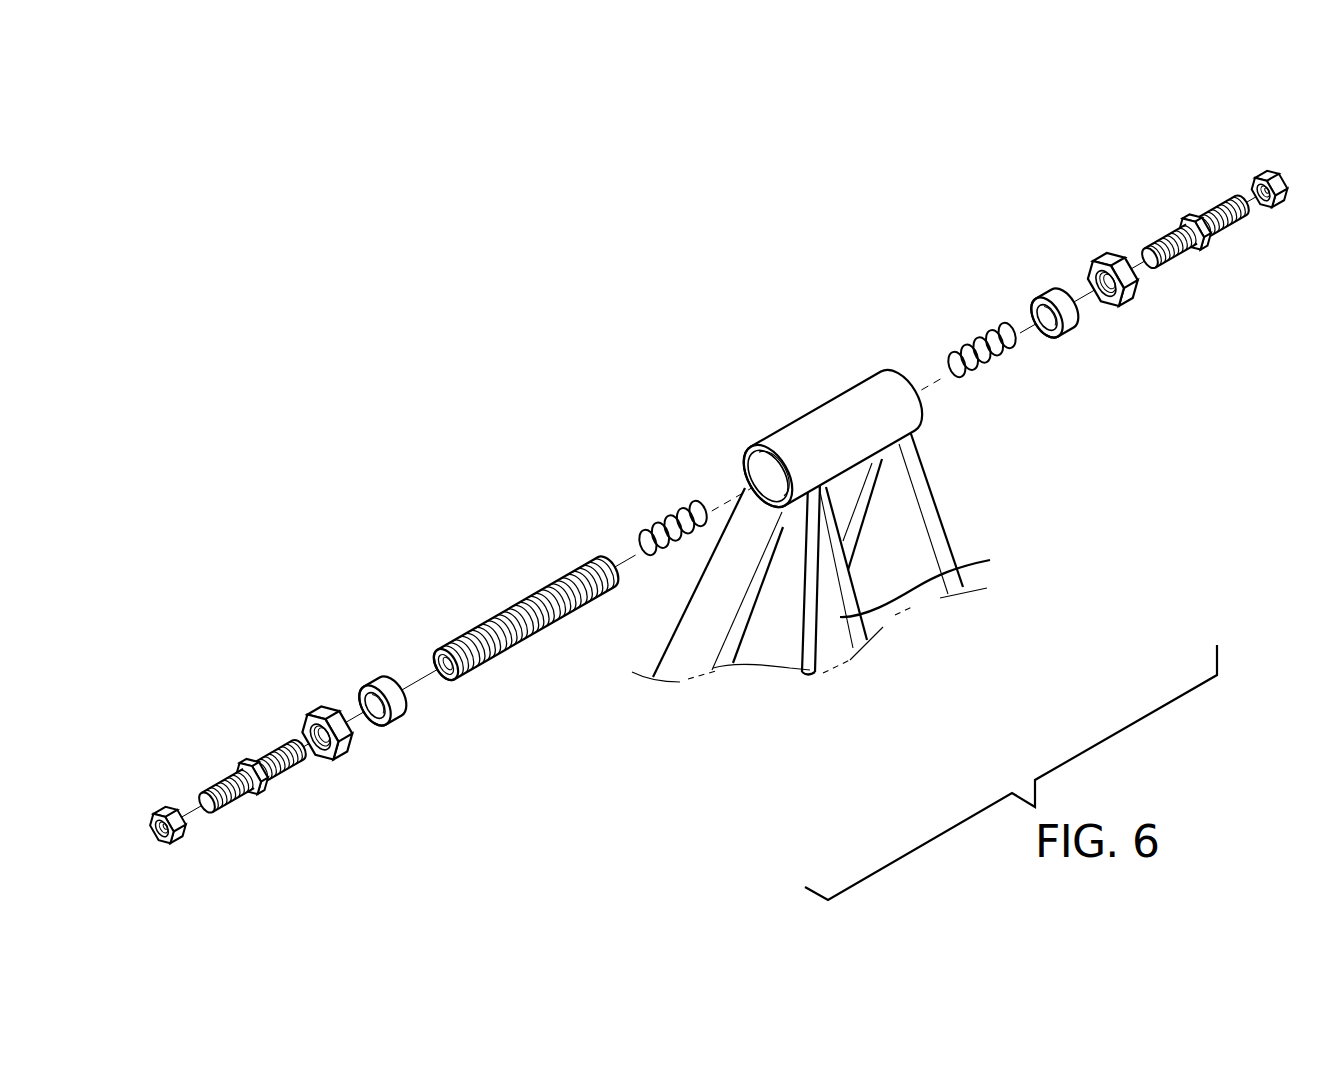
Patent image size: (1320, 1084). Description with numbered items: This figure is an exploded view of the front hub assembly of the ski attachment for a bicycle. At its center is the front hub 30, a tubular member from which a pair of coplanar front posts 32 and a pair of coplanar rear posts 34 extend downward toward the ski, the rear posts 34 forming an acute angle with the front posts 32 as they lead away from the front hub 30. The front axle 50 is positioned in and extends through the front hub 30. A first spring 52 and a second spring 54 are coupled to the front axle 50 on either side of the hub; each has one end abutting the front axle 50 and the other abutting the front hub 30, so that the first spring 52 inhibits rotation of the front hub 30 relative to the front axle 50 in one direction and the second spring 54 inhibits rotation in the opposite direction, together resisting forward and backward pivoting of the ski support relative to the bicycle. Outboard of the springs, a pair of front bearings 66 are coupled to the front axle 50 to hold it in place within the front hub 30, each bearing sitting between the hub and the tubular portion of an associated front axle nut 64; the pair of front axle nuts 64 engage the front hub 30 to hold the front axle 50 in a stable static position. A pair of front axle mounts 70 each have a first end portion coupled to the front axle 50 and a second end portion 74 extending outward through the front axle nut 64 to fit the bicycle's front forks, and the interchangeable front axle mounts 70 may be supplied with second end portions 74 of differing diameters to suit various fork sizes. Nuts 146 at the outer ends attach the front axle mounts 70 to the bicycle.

The front hub 30 is at (836, 410).
The front posts 32 is at (927, 543).
The rear posts 34 is at (695, 632).
The front axle 50 is at (522, 600).
The first spring 52 is at (678, 505).
The second spring 54 is at (983, 337).
The front axle nuts 64 is at (318, 722).
The front bearings 66 is at (372, 680).
The front axle mounts 70 is at (228, 802).
The second end portion 74 is at (728, 501).
The nuts 146 is at (166, 808).